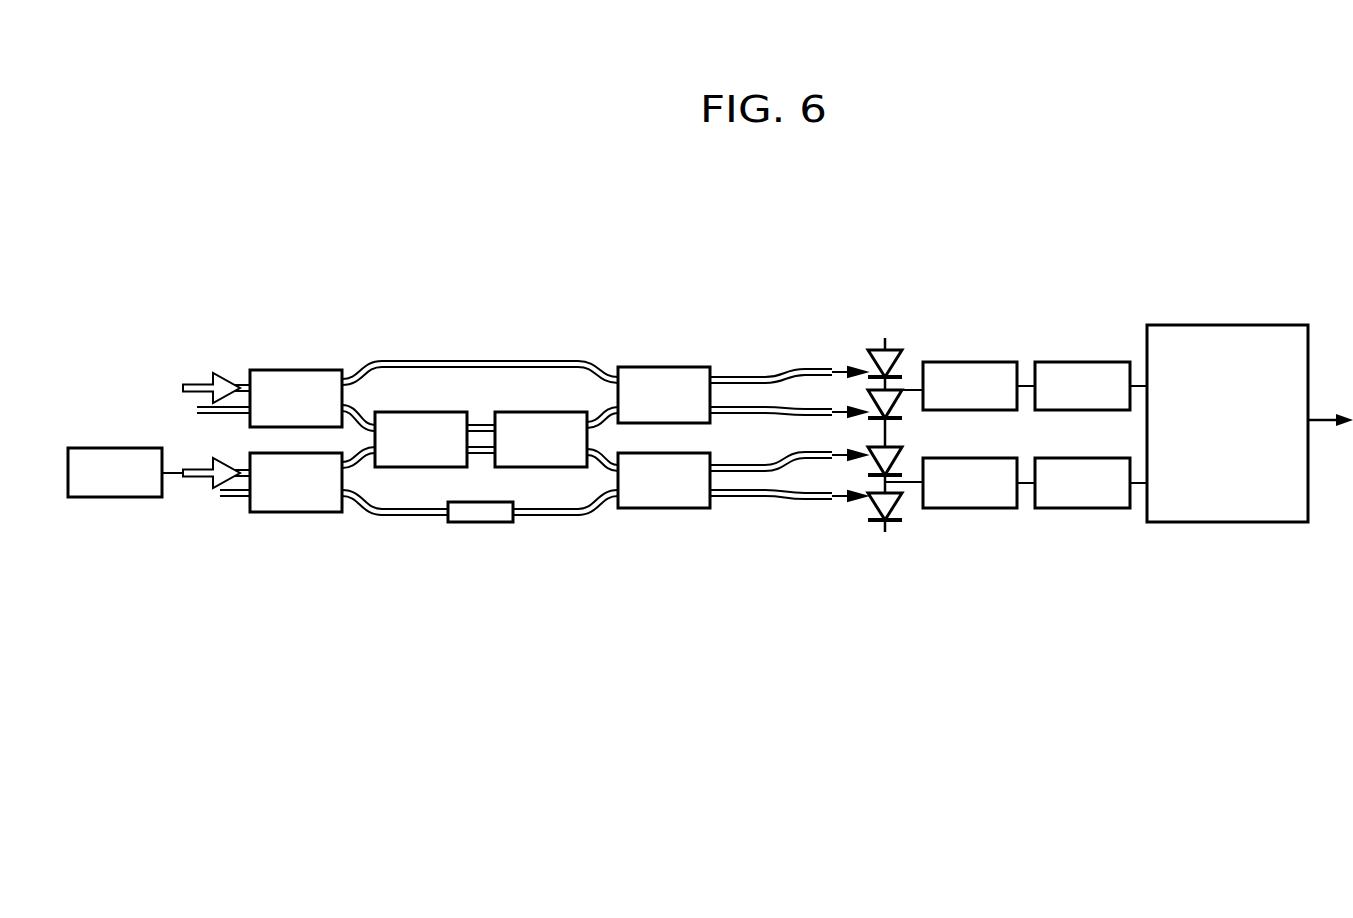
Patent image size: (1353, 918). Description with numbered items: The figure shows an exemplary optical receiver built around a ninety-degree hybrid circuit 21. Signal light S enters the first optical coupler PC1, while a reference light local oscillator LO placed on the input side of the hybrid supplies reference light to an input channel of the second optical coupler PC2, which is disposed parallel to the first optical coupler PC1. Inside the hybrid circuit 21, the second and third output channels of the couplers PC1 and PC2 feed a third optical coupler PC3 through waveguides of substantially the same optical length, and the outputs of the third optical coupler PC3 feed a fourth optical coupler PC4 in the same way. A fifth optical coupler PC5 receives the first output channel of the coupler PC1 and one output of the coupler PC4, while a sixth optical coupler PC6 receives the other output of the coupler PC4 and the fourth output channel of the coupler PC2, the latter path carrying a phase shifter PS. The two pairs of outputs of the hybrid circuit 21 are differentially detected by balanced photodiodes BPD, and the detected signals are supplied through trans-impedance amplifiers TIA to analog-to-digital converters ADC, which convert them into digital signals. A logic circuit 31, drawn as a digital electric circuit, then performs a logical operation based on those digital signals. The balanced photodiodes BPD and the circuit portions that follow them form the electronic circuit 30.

The 90-degree hybrid circuit 21 is at (514, 468).
The electronic circuit 30 is at (1119, 354).
The logic circuit 31 is at (1225, 325).
The local oscillator LO is at (115, 497).
The signal light S is at (201, 386).
The first optical coupler PC1 is at (297, 370).
The second optical coupler PC2 is at (292, 512).
The third optical coupler PC3 is at (437, 412).
The fourth optical coupler PC4 is at (548, 412).
The fifth optical coupler PC5 is at (662, 367).
The sixth optical coupler PC6 is at (663, 508).
The phase shifter PS is at (497, 522).
The balanced photodiodes BPD is at (895, 340).
The trans-impedance amplifiers TIA is at (970, 435).
The analog-to-digital converters ADC is at (1082, 435).